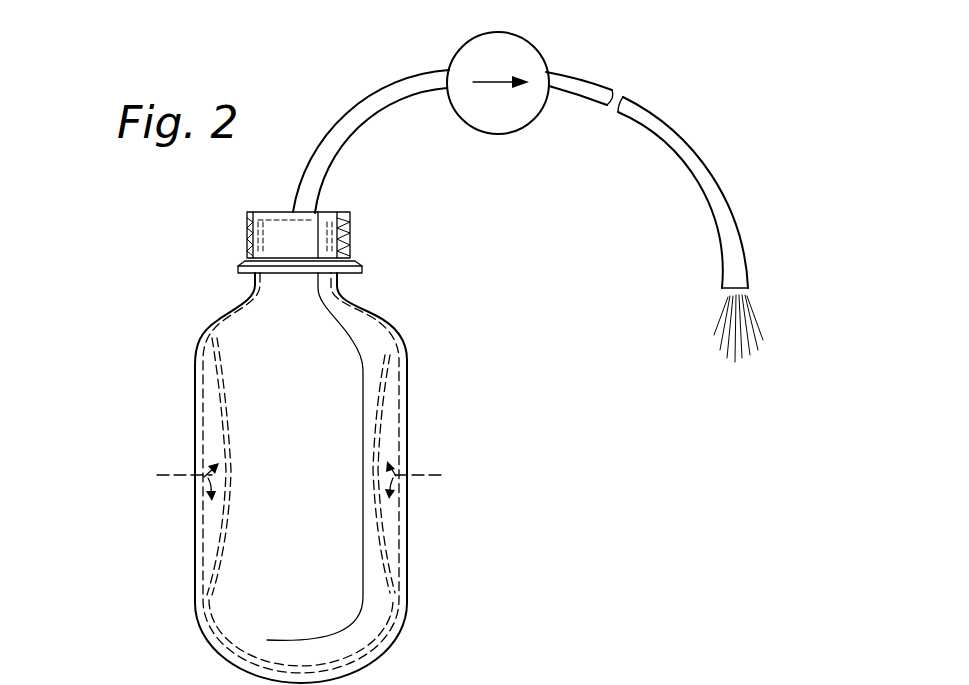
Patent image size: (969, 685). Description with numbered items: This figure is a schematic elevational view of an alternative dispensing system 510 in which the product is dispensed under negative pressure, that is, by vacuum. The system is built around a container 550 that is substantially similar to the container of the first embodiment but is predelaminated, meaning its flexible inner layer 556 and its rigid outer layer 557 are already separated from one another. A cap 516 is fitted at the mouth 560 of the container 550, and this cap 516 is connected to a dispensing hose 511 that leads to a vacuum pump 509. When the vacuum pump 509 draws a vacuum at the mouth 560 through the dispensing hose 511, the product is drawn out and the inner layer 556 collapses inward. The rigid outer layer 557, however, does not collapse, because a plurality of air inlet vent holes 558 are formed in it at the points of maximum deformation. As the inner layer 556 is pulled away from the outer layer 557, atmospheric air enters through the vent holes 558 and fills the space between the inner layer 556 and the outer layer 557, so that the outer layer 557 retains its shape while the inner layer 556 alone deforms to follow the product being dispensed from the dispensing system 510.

The vacuum pump 509 is at (537, 48).
The dispensing system 510 is at (131, 411).
The dispensing hose 511 is at (612, 86).
The cap 516 is at (275, 210).
The container 550 is at (186, 372).
The inner layer 556 is at (218, 521).
The outer layer 557 is at (200, 521).
The air inlet vent holes 558 is at (196, 473).
The mouth 560 is at (327, 207).